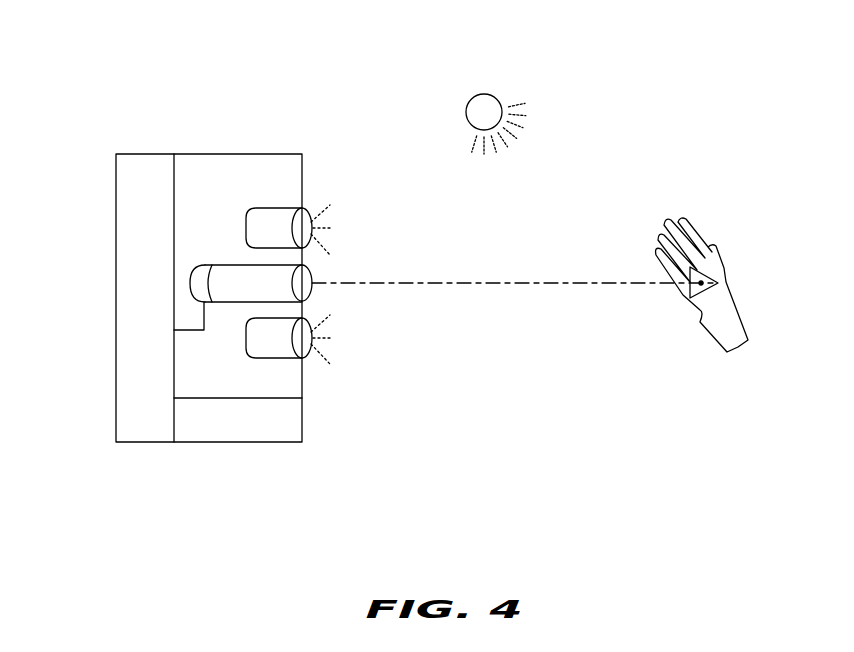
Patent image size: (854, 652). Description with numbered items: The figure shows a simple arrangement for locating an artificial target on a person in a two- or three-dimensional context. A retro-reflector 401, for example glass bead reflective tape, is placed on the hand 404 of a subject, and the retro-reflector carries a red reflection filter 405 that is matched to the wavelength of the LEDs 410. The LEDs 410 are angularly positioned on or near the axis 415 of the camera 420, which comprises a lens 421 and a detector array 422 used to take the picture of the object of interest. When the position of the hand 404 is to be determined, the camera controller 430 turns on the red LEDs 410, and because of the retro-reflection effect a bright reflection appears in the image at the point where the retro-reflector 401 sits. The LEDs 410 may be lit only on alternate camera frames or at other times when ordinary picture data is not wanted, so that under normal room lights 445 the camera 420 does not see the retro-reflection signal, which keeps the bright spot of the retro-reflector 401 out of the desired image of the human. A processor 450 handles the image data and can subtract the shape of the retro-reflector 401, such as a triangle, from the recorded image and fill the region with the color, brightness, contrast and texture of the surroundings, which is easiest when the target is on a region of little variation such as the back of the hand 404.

The retro-reflector 401 is at (720, 275).
The hand of a subject 404 is at (700, 238).
The red reflection filter 405 is at (688, 303).
The LEDs 410 is at (282, 218).
The axis 415 is at (463, 284).
The camera 420 is at (236, 265).
The lens 421 is at (313, 272).
The detector array 422 is at (208, 265).
The camera controller 430 is at (116, 303).
The room lights 445 is at (482, 102).
The processor 450 is at (260, 442).